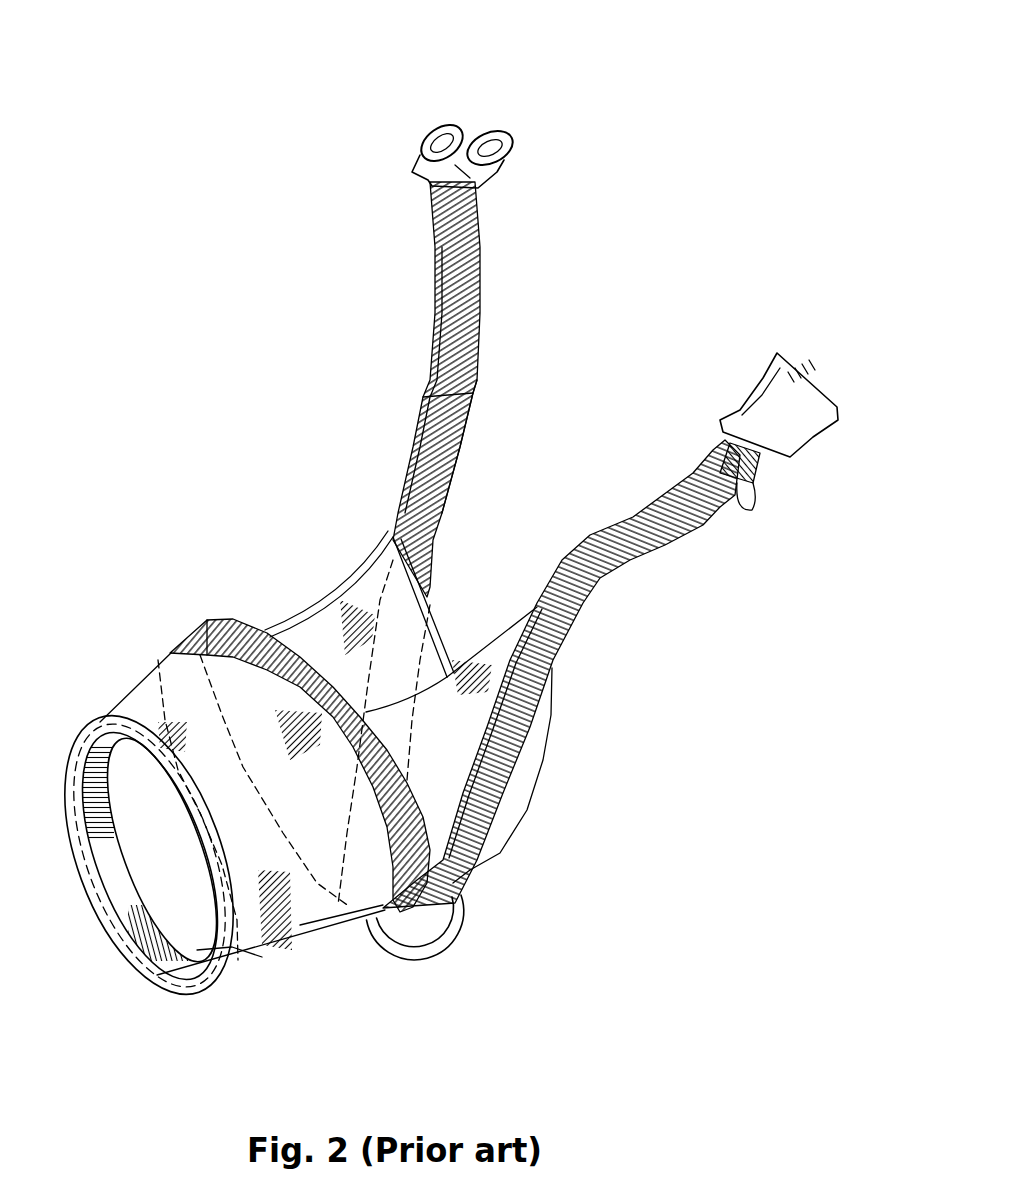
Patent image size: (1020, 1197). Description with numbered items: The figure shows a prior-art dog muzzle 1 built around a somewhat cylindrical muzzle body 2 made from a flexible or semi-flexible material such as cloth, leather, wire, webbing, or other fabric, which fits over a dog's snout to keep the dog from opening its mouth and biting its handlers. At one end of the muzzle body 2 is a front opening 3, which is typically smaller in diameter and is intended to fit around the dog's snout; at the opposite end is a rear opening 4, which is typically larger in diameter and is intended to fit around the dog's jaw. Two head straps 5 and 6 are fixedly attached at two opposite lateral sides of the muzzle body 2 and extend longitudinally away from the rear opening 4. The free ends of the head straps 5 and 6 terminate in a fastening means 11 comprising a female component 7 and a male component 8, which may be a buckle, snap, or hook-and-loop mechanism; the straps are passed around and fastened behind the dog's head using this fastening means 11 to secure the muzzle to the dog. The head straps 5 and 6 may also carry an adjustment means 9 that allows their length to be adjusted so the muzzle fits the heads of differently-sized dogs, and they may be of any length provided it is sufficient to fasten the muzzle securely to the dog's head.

The muzzle 1 is at (230, 464).
The muzzle body 2 is at (147, 687).
The front opening 3 is at (105, 923).
The rear opening 4 is at (453, 657).
The head strap 5 is at (627, 553).
The head strap 6 is at (447, 321).
The female component 7 is at (815, 385).
The male component 8 is at (479, 140).
The adjustment means 9 is at (473, 397).
The fastening means 11 is at (810, 457).